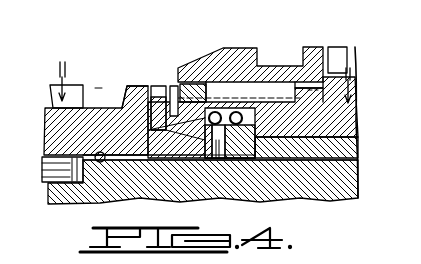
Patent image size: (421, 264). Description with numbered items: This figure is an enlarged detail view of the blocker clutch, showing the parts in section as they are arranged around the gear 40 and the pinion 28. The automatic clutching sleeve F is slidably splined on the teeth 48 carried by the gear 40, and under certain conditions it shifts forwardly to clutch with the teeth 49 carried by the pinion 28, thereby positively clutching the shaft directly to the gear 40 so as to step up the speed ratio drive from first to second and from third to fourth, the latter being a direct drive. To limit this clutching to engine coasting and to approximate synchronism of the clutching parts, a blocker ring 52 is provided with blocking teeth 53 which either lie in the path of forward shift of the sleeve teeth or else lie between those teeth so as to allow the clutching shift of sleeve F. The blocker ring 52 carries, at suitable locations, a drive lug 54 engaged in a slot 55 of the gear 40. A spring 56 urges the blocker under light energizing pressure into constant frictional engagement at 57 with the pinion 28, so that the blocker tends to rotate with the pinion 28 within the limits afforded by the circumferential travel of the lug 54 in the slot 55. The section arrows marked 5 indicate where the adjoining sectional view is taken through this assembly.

The pinion 28 is at (79, 85).
The gear 40 is at (348, 53).
The teeth 48 is at (264, 93).
The teeth 49 is at (133, 86).
The blocker ring 52 is at (170, 125).
The blocking teeth 53 is at (156, 86).
The drive lug 54 is at (176, 116).
The slot 55 is at (192, 100).
The spring 56 is at (250, 112).
The frictional engagement 57 is at (212, 150).
The section line 5- 5 is at (205, 103).
The automatic clutching sleeve F is at (235, 62).